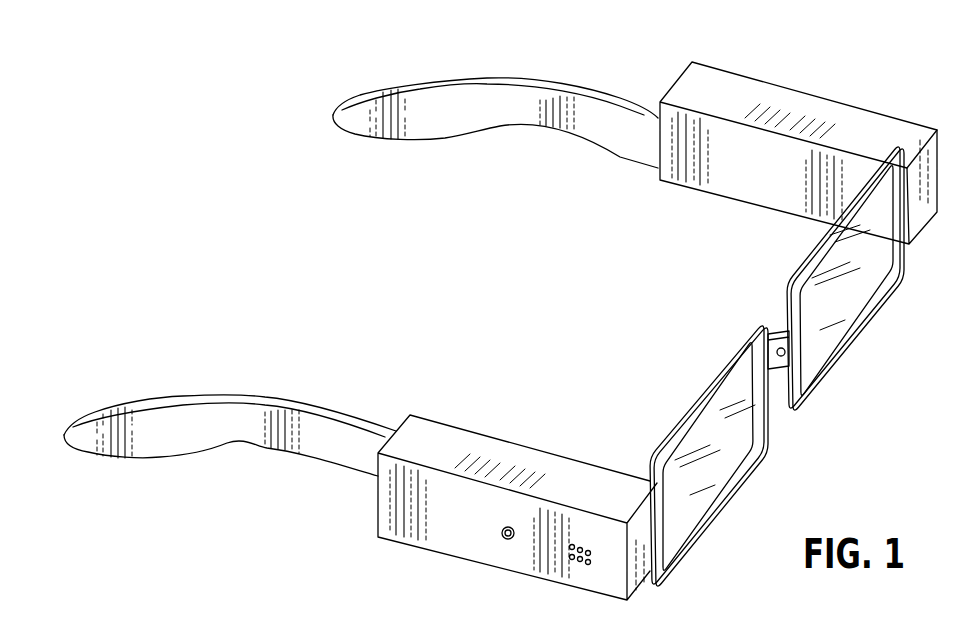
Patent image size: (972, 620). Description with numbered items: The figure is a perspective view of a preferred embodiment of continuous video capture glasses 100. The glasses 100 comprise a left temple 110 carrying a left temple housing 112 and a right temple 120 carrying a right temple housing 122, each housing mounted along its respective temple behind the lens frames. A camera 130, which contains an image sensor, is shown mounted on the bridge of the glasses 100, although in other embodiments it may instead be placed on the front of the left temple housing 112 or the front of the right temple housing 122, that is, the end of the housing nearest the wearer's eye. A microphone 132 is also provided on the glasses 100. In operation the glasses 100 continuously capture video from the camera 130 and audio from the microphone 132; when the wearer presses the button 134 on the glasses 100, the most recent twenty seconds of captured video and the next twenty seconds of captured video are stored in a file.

The continuous video capture glasses 100 is at (890, 47).
The left temple 110 is at (580, 130).
The left temple housing 112 is at (752, 184).
The right temple 120 is at (310, 398).
The right temple housing 122 is at (557, 470).
The camera 130 is at (784, 352).
The microphone 132 is at (590, 563).
The button 134 is at (507, 538).